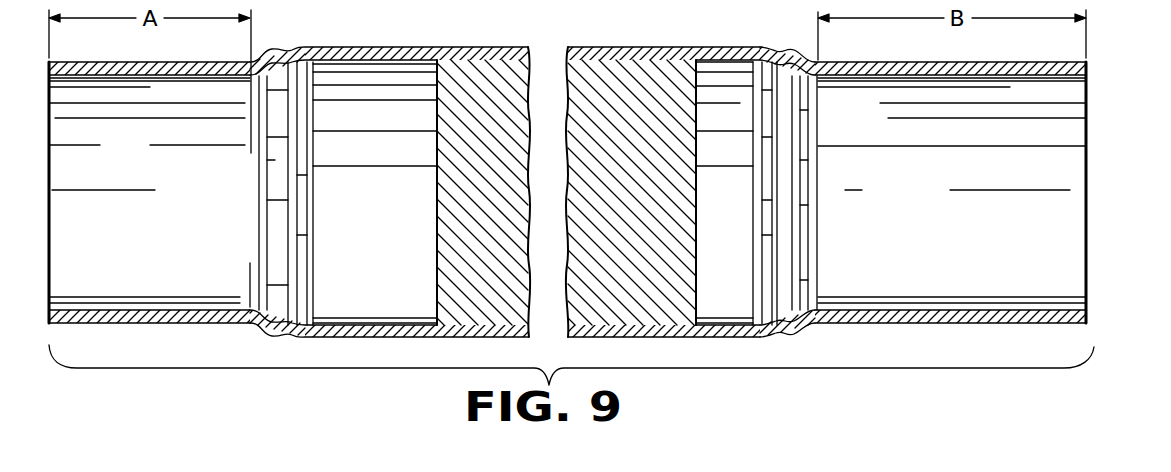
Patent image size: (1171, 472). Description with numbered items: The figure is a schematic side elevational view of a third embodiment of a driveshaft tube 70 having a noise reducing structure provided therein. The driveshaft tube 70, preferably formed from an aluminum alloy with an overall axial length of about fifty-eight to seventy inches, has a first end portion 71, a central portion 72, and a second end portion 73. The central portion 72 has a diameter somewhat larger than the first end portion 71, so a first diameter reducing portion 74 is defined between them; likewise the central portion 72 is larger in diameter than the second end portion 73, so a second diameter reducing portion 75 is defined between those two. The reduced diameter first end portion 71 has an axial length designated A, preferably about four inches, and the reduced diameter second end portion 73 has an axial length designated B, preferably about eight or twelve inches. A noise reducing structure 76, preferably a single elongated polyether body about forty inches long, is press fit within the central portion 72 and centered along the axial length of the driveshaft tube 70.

The driveshaft tube 70 is at (663, 33).
The first end portion 71 is at (147, 68).
The central portion 72 is at (724, 62).
The second end portion 73 is at (1052, 78).
The first diameter reducing portion 74 is at (283, 62).
The second diameter reducing portion 75 is at (791, 63).
The noise reducing structure 76 is at (683, 232).